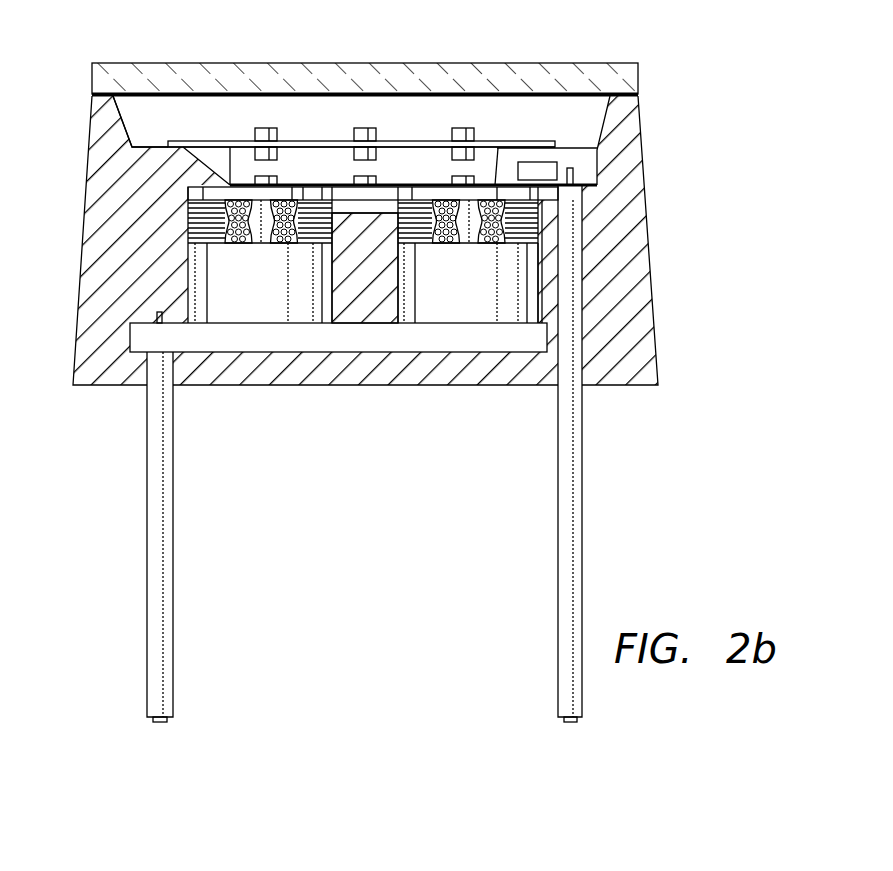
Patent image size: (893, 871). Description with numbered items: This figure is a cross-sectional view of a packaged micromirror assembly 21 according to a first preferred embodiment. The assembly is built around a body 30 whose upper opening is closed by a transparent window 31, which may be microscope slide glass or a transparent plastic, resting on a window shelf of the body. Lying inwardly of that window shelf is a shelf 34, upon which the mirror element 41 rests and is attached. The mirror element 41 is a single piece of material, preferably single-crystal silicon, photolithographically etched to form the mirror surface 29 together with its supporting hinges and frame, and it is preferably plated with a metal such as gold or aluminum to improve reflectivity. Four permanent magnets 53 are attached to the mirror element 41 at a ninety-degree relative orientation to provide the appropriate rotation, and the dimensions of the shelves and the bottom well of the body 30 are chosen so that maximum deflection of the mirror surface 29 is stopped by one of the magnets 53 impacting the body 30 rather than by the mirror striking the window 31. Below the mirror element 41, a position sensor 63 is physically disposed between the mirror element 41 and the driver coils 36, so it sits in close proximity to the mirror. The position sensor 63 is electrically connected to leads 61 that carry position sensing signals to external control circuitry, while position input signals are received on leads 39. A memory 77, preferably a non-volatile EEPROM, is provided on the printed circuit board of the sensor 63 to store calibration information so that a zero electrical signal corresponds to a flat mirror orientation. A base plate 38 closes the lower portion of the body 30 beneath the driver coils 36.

The packaged micromirror assembly 21 is at (677, 184).
The mirror surface 29 is at (413, 142).
The body 30 is at (143, 261).
The transparent window 31 is at (545, 62).
The shelf 34 is at (160, 146).
The driver coils 36 is at (263, 297).
The base plate 38 is at (477, 342).
The leads 39 is at (174, 544).
The mirror element 41 is at (494, 136).
The permanent magnets 53 is at (255, 138).
The leads 61 is at (583, 545).
The position sensor 63 is at (338, 178).
The memory 77 is at (537, 168).